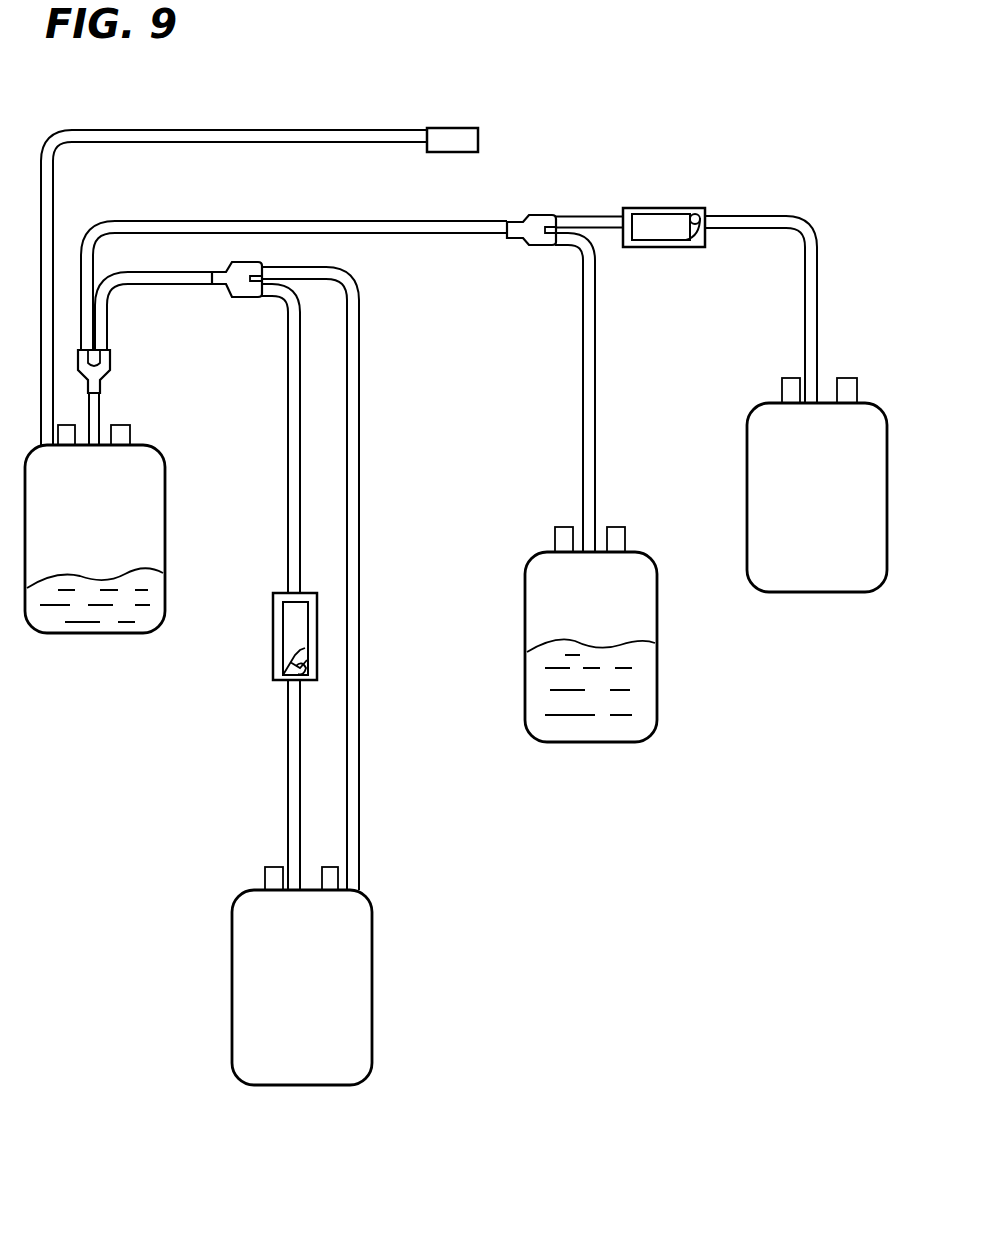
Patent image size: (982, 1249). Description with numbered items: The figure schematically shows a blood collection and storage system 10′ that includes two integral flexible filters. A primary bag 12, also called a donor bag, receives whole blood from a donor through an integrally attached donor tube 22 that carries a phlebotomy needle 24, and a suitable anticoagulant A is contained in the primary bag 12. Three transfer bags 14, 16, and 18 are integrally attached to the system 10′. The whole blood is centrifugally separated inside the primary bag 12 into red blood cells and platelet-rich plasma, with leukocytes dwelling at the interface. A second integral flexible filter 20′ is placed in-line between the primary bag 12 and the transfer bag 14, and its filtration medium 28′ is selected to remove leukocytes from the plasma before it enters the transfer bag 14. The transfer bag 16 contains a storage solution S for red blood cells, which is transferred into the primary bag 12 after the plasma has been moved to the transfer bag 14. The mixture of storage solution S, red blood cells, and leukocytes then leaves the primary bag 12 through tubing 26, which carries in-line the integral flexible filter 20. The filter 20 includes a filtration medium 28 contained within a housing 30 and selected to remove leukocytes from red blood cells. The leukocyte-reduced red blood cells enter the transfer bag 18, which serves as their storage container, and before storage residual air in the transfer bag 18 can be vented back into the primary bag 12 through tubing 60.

The blood collection and storage system 10′ is at (773, 207).
The primary bag 12 is at (135, 493).
The transfer bag 14 is at (778, 445).
The transfer bag 16 is at (545, 588).
The transfer bag 18 is at (336, 976).
The integral flexible filter 20 is at (288, 615).
The second integral flexible filter 20′ is at (648, 212).
The donor tube 22 is at (190, 134).
The phlebotomy needle 24 is at (453, 137).
The tubing 26 is at (292, 800).
The filtration medium 28 is at (305, 680).
The filtration medium 28′ is at (700, 213).
The housing 30 is at (290, 650).
The tubing 60 is at (353, 528).
The anticoagulant A is at (125, 612).
The storage solution S is at (625, 698).